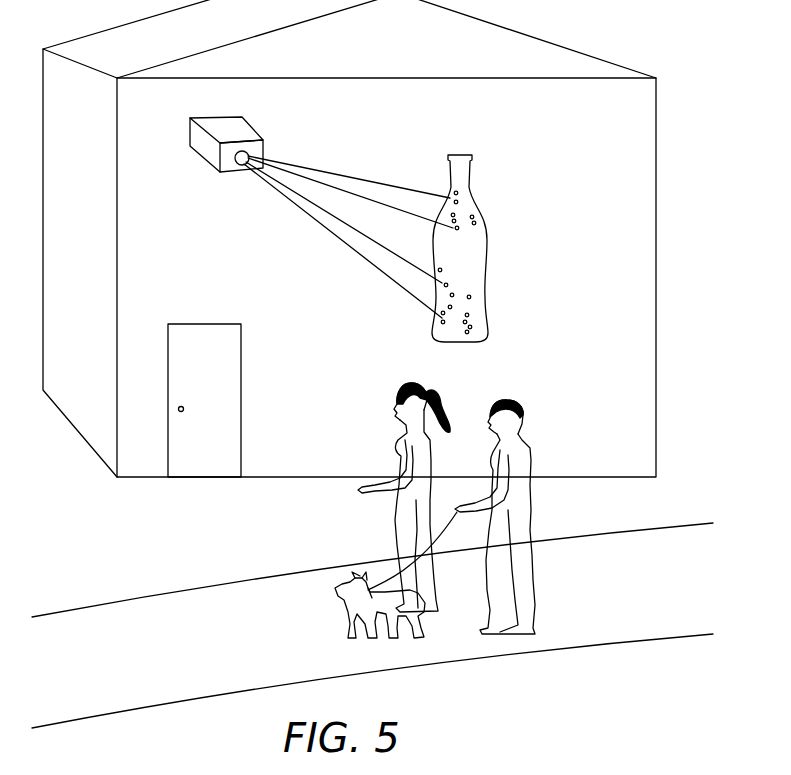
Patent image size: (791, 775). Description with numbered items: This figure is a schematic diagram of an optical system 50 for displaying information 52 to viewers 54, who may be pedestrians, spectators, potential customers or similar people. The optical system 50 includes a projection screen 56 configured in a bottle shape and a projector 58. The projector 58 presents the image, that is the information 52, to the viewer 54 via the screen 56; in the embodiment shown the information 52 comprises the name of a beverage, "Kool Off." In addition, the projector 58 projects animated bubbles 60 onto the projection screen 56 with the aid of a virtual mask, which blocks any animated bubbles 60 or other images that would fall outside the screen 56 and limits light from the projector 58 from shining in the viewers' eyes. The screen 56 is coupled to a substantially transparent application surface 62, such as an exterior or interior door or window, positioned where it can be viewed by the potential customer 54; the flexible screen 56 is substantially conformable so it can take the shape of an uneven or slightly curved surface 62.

The optical system 50 is at (337, 320).
The information 52 is at (482, 245).
The viewers 54 is at (517, 455).
The projection screen 56 is at (491, 248).
The projector 58 is at (232, 122).
The animated bubbles 60 is at (472, 313).
The substantially transparent application surface 62 is at (656, 273).